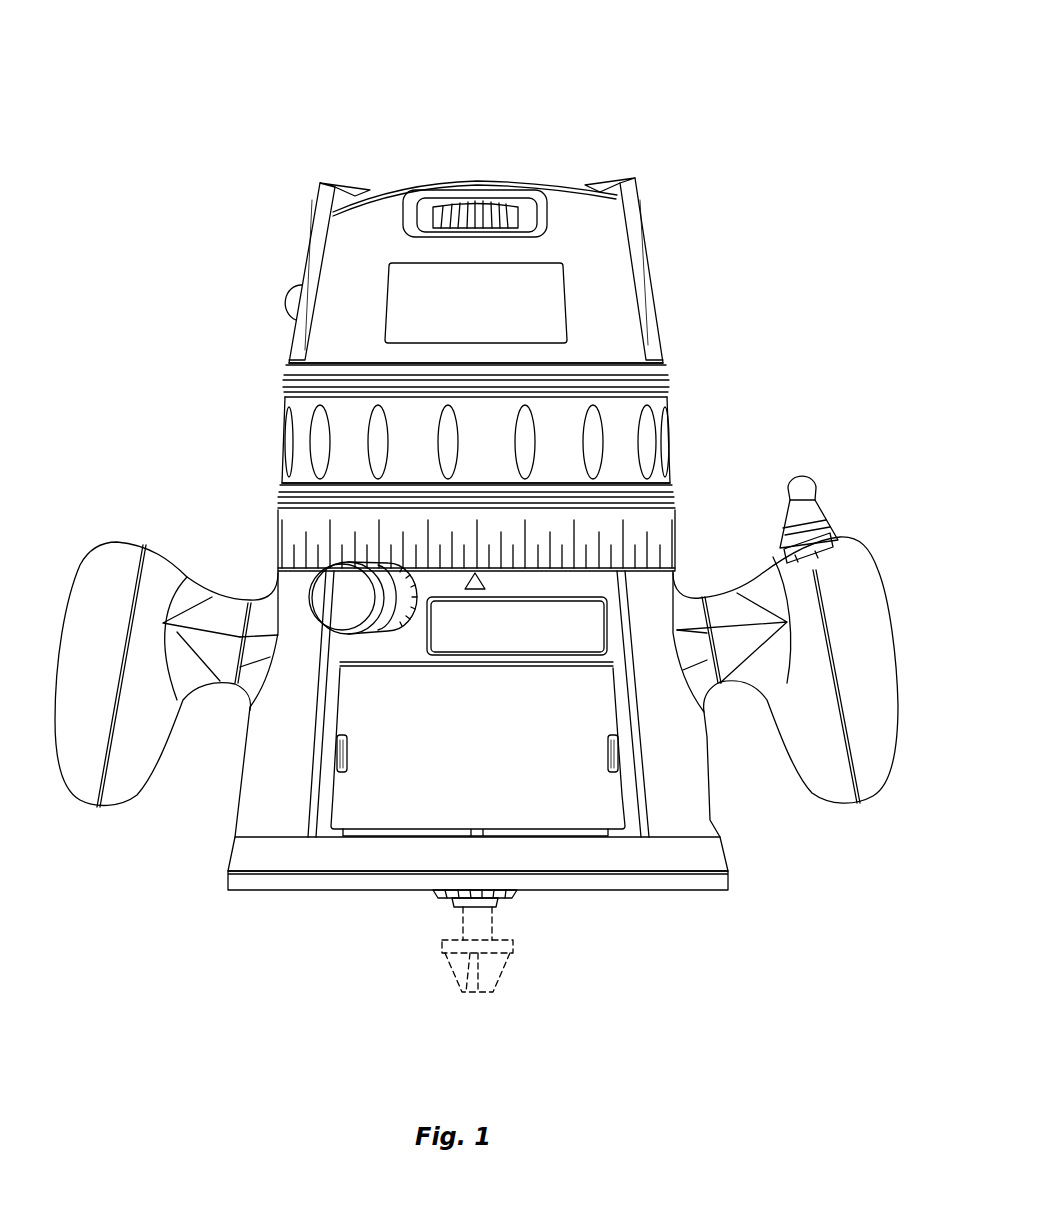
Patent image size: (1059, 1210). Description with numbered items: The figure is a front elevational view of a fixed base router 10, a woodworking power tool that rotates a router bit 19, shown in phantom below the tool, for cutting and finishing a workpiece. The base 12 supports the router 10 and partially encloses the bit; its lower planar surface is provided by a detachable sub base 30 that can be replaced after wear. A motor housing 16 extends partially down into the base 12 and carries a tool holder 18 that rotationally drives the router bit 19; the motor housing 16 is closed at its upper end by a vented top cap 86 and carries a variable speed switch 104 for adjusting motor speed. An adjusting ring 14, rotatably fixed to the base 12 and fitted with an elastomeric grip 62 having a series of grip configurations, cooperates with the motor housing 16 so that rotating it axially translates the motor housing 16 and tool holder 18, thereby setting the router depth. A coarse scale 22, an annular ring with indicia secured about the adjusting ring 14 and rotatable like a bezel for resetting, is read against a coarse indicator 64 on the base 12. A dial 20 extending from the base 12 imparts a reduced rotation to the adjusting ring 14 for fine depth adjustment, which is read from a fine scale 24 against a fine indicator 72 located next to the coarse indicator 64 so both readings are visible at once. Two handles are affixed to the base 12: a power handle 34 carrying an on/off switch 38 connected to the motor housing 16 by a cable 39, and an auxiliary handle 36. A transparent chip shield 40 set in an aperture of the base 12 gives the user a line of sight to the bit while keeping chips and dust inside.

The fixed base router 10 is at (633, 85).
The base 12 is at (722, 814).
The adjusting ring 14 is at (675, 422).
The motor housing 16 is at (657, 293).
The tool holder 18 is at (508, 905).
The router bit 19 is at (457, 977).
The dial 20 is at (333, 587).
The coarse scale 22 is at (673, 530).
The fine scale 24 is at (380, 557).
The sub base 30 is at (700, 890).
The power handle 34 is at (873, 570).
The auxiliary handle 36 is at (118, 553).
The on/off switch 38 is at (827, 527).
The cable 39 is at (808, 482).
The chip shield 40 is at (383, 810).
The elastomeric grip 62 is at (656, 404).
The coarse indicator 64 is at (487, 582).
The fine indicator 72 is at (412, 603).
The top cap 86 is at (603, 247).
The variable speed switch 104 is at (480, 203).